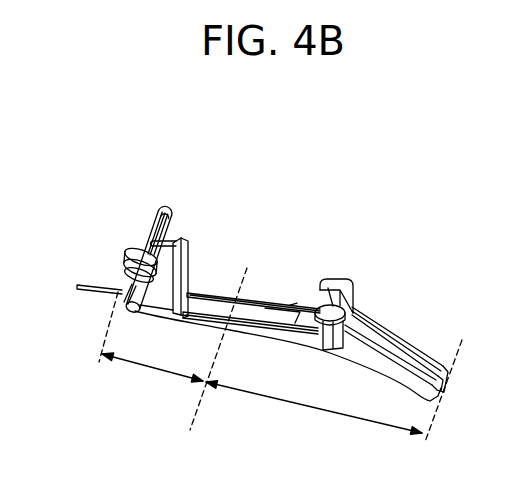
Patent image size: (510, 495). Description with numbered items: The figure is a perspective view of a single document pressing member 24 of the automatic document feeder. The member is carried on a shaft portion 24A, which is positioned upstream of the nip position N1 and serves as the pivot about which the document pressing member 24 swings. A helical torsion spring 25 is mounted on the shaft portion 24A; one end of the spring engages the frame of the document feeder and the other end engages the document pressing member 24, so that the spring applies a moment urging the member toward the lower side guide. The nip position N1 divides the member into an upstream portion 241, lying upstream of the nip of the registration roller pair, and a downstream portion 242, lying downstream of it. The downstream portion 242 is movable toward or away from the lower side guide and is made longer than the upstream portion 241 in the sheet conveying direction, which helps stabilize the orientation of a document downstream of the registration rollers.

The document pressing member 24 is at (285, 270).
The shaft portion 24A is at (168, 211).
The helical torsion spring 25 is at (126, 262).
The upstream portion 241 is at (151, 349).
The downstream portion 242 is at (334, 393).
The nip position N1 is at (209, 365).